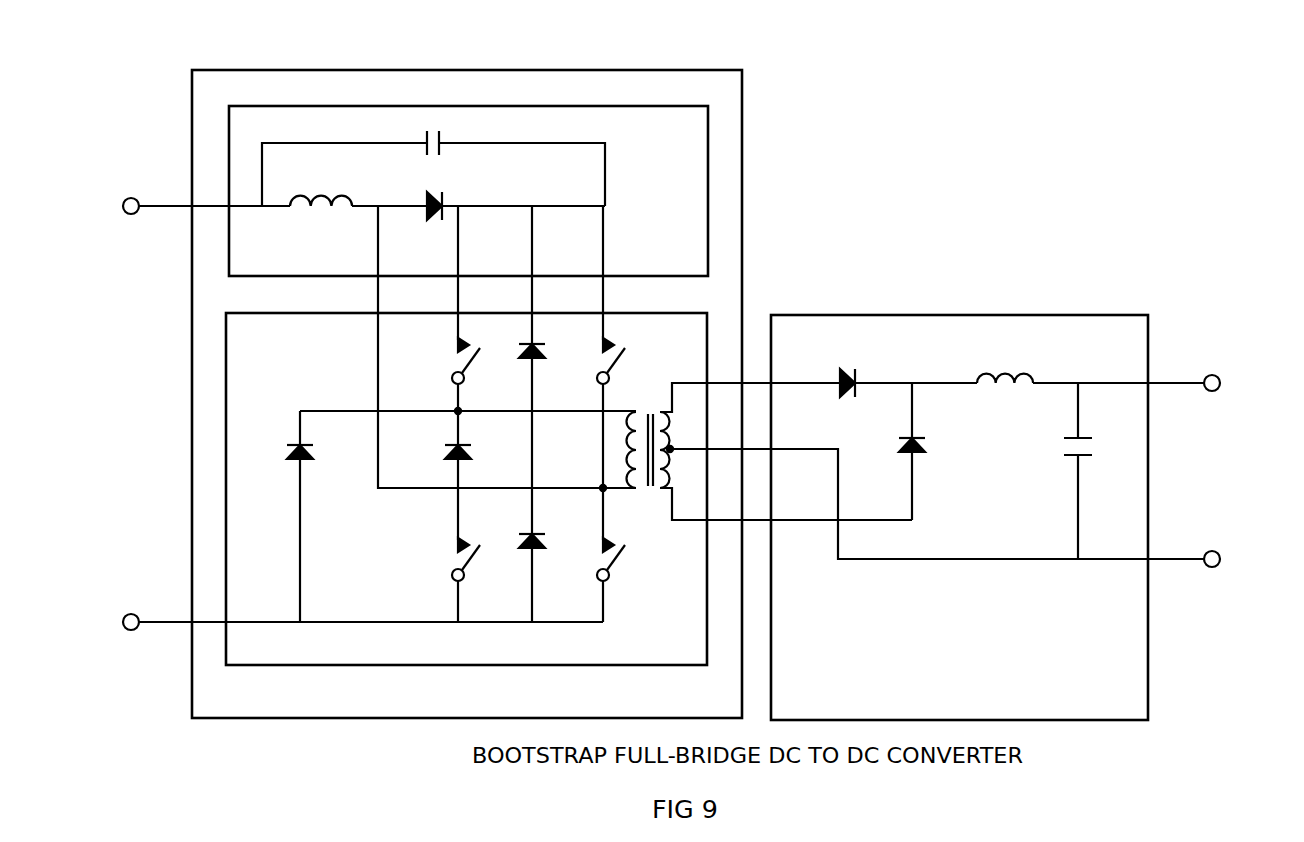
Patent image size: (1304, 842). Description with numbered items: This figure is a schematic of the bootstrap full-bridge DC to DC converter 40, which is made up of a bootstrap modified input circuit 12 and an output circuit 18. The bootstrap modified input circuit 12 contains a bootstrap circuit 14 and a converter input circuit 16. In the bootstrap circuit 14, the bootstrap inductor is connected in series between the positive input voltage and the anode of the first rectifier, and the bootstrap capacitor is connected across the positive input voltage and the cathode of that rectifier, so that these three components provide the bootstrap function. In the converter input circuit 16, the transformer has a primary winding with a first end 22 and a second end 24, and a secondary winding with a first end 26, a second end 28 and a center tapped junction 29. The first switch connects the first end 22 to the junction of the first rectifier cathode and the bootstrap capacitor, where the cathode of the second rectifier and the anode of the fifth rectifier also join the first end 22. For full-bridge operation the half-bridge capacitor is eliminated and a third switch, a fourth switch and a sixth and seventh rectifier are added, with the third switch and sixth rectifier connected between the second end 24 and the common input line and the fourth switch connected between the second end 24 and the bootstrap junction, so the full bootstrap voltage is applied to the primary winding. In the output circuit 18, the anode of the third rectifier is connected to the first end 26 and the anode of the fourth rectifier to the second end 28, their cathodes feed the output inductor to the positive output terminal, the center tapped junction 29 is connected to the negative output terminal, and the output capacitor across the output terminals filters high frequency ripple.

The bootstrap modified input circuit 12 is at (467, 394).
The bootstrap circuit 14 is at (468, 191).
The converter input circuit 16 is at (466, 489).
The output circuit 18 is at (959, 517).
The first end of primary winding 22 is at (647, 437).
The second end of primary winding 24 is at (622, 504).
The first end of secondary winding 26 is at (750, 400).
The second end of secondary winding 28 is at (786, 508).
The center tapped junction 29 is at (672, 451).
The bootstrap DC to DC converter 40 is at (950, 162).